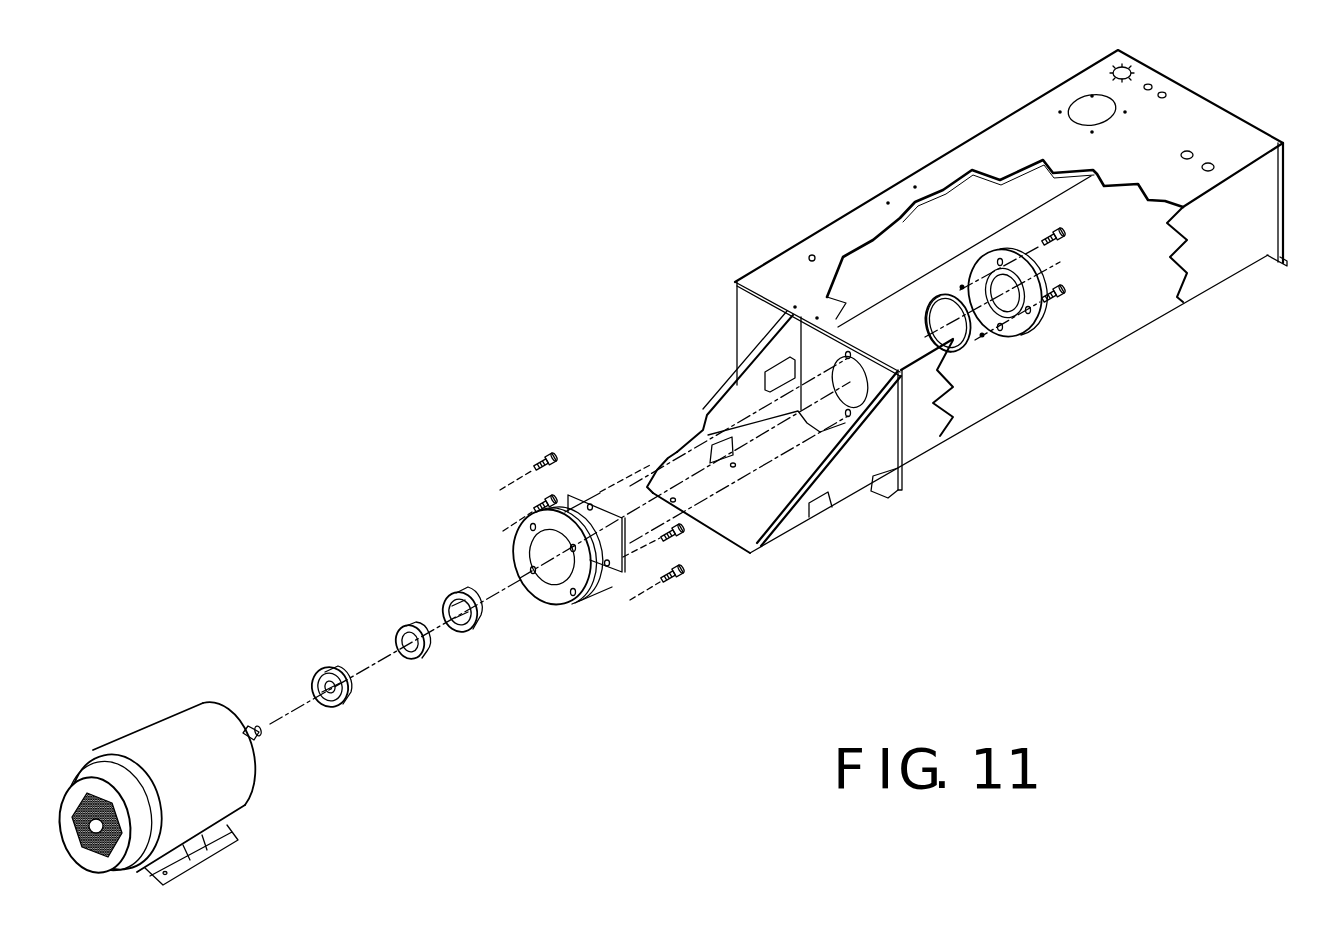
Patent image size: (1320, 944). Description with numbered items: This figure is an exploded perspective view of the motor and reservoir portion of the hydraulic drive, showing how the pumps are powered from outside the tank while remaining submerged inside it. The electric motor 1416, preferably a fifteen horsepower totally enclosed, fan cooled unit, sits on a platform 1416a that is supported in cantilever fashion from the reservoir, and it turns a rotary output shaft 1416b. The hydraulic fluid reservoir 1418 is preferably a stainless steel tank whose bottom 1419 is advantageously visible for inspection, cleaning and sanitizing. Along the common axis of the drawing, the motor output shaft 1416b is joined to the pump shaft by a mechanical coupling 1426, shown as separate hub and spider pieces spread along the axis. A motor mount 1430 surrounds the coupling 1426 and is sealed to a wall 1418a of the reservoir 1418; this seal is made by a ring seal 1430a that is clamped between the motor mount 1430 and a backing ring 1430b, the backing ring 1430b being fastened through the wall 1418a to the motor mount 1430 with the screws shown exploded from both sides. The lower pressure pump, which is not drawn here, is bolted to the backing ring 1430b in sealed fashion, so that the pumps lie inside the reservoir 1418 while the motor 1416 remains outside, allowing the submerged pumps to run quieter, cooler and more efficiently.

The electric motor 1416 is at (243, 793).
The platform 1416a is at (730, 520).
The rotary output shaft 1416b is at (258, 740).
The hydraulic fluid reservoir 1418 is at (1208, 277).
The wall 1418a is at (810, 348).
The bottom 1419 is at (918, 460).
The mechanical coupling 1426 is at (455, 573).
The motor mount 1430 is at (583, 602).
The ring seal 1430a is at (967, 350).
The backing ring 1430b is at (1032, 327).